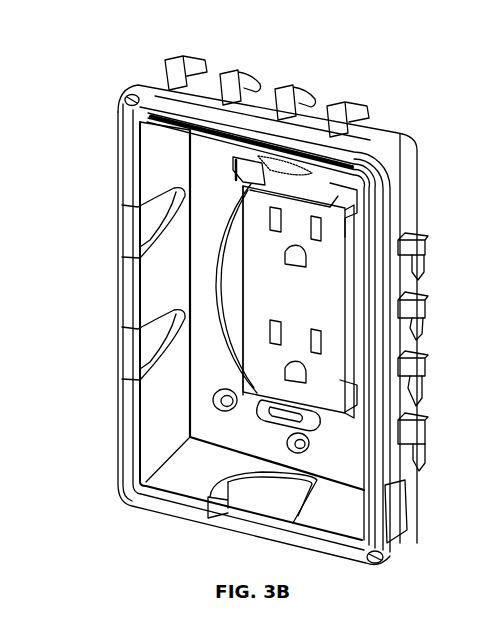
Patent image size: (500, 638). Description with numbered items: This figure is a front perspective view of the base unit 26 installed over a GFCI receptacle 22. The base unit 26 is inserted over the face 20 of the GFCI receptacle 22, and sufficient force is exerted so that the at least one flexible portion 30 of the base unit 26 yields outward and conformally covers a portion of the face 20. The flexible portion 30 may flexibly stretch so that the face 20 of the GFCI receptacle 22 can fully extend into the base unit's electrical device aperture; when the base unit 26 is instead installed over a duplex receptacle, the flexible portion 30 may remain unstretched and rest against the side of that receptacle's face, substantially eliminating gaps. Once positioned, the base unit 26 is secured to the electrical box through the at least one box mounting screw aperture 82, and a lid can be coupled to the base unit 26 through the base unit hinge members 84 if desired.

The face 20 is at (312, 305).
The GFCI receptacle 22 is at (260, 277).
The base unit 26 is at (402, 131).
The flexible portion 30 is at (240, 175).
The box mounting screw aperture 82 is at (262, 412).
The base unit hinge members 84 is at (193, 58).